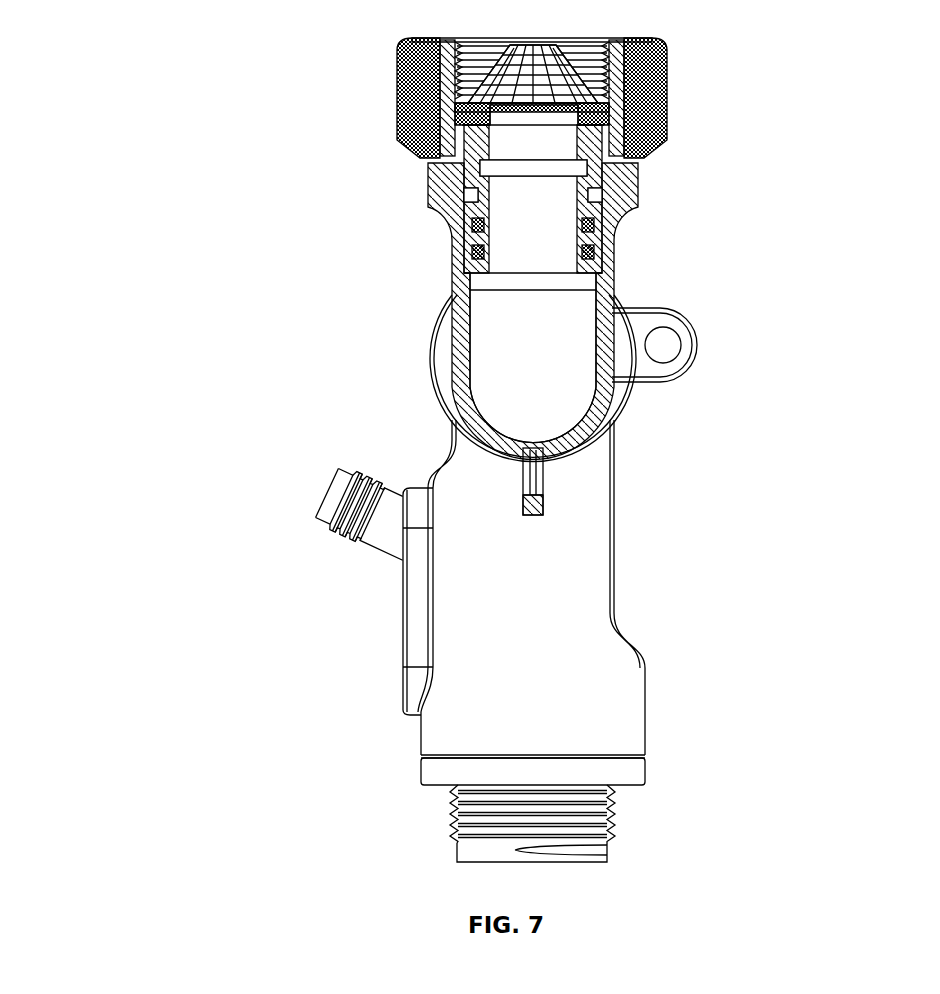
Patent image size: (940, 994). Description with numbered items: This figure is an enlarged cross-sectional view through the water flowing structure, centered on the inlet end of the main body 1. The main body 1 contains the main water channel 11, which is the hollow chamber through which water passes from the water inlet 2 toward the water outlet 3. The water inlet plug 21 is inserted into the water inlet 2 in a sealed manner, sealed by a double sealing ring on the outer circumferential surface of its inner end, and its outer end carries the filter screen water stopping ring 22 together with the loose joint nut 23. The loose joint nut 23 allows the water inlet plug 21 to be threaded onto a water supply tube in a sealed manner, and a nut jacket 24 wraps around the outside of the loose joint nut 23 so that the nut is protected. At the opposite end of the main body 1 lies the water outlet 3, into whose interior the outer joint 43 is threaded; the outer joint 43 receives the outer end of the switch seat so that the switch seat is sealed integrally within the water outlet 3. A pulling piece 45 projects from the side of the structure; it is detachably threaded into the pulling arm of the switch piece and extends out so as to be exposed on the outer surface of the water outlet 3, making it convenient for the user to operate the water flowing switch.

The main body 1 is at (620, 383).
The water inlet 2 is at (628, 213).
The water outlet 3 is at (582, 578).
The main water channel 11 is at (503, 345).
The water inlet plug 21 is at (463, 183).
The filter screen water stopping ring 22 is at (665, 150).
The loose joint nut 23 is at (665, 90).
The nut jacket 24 is at (403, 118).
The outer joint 43 is at (453, 830).
The pulling piece 45 is at (377, 541).